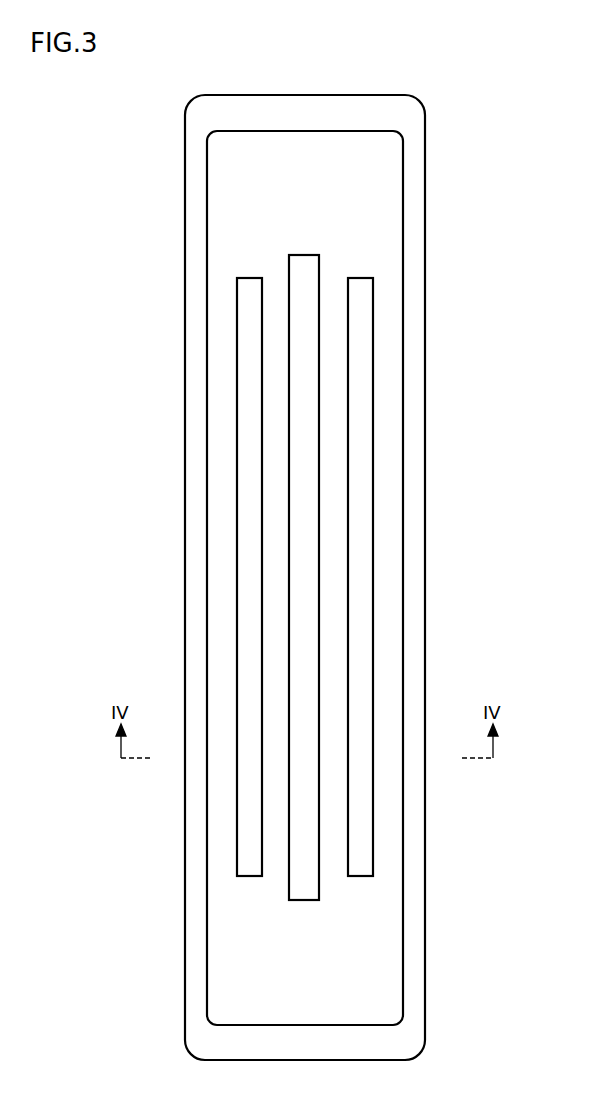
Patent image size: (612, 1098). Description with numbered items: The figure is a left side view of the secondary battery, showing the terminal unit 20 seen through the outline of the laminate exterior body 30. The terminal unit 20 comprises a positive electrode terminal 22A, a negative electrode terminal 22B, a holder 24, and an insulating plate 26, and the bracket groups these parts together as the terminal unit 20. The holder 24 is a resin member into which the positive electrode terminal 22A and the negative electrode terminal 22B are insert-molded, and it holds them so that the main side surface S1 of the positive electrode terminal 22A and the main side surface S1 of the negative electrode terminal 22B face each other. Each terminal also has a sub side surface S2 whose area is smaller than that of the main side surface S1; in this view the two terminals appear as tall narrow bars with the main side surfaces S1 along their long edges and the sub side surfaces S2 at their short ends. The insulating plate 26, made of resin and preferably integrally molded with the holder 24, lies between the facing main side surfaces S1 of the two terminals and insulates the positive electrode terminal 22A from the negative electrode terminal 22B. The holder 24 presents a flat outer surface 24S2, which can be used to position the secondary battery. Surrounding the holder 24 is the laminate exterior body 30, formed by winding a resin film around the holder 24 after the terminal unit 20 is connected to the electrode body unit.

The laminate exterior body 30 is at (412, 133).
The holder 24 is at (390, 405).
The outer surface 24S2 is at (362, 207).
The negative electrode terminal 22B is at (248, 343).
The positive electrode terminal 22A is at (363, 372).
The insulating plate 26 is at (300, 435).
The terminal unit 20 is at (500, 330).
The main side surface S1 is at (237, 525).
The sub side surface S2 is at (247, 277).